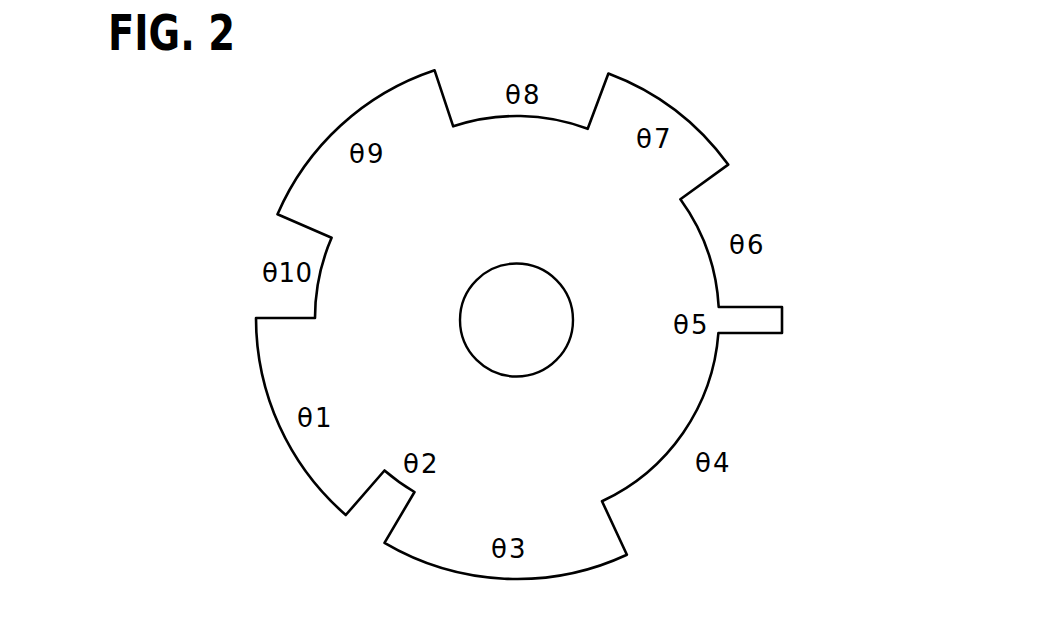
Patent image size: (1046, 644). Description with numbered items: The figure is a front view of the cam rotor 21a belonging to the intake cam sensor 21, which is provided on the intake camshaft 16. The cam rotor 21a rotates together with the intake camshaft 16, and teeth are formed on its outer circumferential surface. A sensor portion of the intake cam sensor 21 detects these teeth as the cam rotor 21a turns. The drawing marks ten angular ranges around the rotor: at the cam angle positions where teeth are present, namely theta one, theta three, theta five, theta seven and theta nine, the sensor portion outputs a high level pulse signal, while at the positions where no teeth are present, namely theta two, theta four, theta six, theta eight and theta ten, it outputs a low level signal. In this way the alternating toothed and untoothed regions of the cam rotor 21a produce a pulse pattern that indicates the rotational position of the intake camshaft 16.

The intake cam sensor 21 is at (690, 105).
The intake camshaft 16 is at (519, 264).
The cam rotor 21a is at (670, 379).